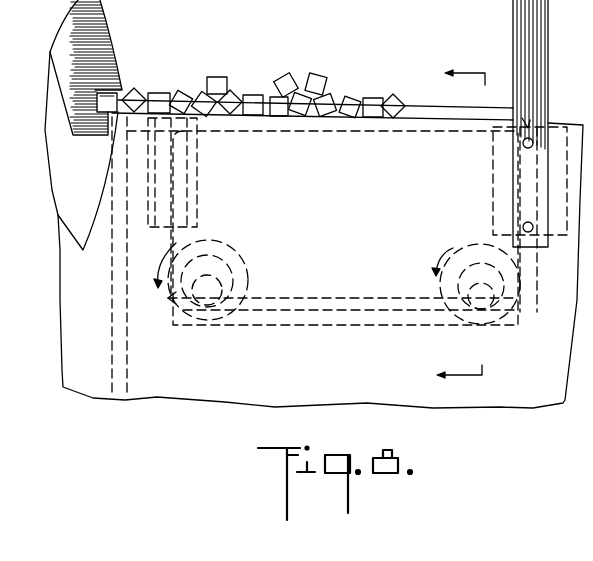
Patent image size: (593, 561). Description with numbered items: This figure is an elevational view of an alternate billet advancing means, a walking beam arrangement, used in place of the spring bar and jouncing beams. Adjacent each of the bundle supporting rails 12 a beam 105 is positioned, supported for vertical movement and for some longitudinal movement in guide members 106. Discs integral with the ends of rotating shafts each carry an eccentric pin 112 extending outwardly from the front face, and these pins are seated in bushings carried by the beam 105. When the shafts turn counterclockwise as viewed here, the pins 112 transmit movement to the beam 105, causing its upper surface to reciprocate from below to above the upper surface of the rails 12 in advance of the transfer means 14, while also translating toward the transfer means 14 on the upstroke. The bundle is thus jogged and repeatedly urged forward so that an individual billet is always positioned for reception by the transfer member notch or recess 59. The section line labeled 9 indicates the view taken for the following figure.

The transfer means 14 is at (131, 57).
The notch or recess 59 is at (122, 91).
The rails 12 is at (195, 100).
The beam 105 is at (311, 312).
The guide members 106 is at (192, 198).
The eccentric pin 112 is at (210, 291).
The section line 9- 9 is at (452, 225).